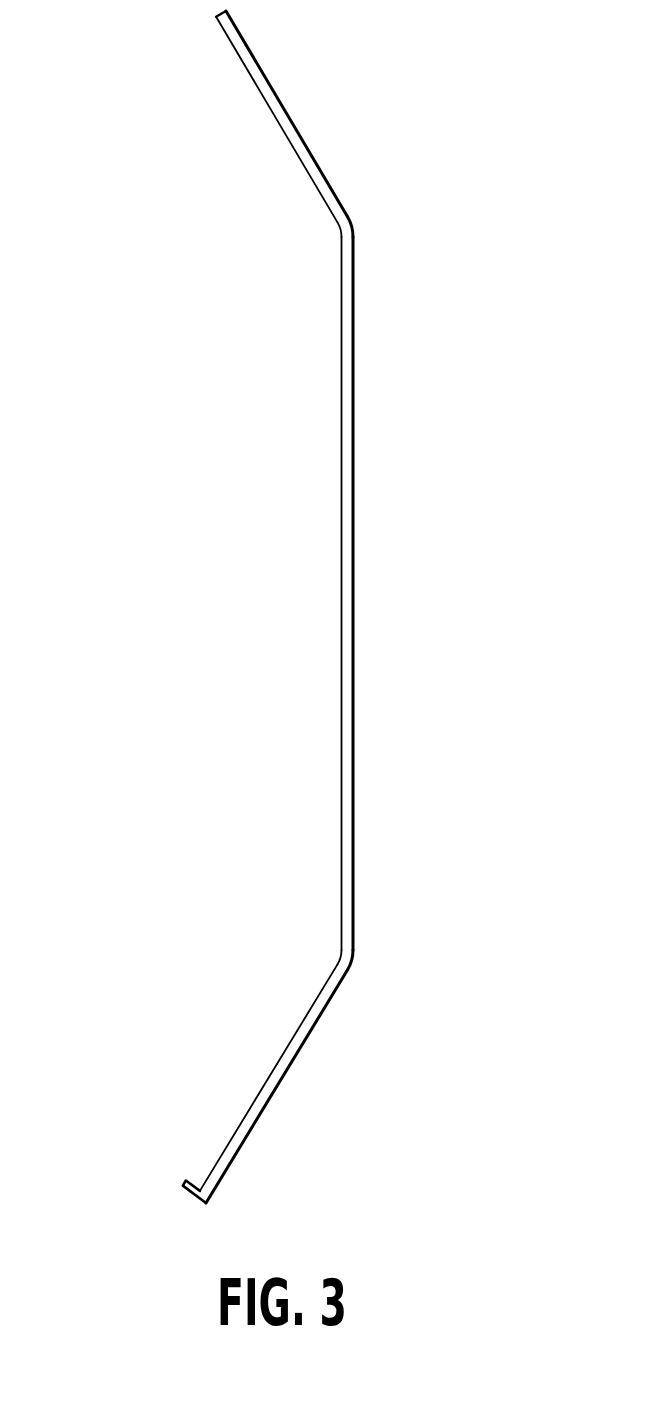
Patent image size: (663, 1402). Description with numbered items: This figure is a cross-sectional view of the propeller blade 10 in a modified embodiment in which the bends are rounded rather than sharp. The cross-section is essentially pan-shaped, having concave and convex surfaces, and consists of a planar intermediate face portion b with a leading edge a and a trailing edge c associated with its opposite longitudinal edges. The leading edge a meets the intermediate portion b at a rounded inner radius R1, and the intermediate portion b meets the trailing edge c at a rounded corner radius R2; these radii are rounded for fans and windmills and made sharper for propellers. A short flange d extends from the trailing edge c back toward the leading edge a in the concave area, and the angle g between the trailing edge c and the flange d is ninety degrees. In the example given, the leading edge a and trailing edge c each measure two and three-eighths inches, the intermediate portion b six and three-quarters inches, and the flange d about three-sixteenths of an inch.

The propeller blade 10 is at (356, 565).
The leading edge a is at (265, 102).
The inner radius R1 is at (340, 238).
The intermediate planar portion b is at (342, 480).
The corner radius R2 is at (336, 966).
The trailing edge c is at (284, 1050).
The flange d is at (188, 1196).
The angle between portions c and d g is at (198, 1168).